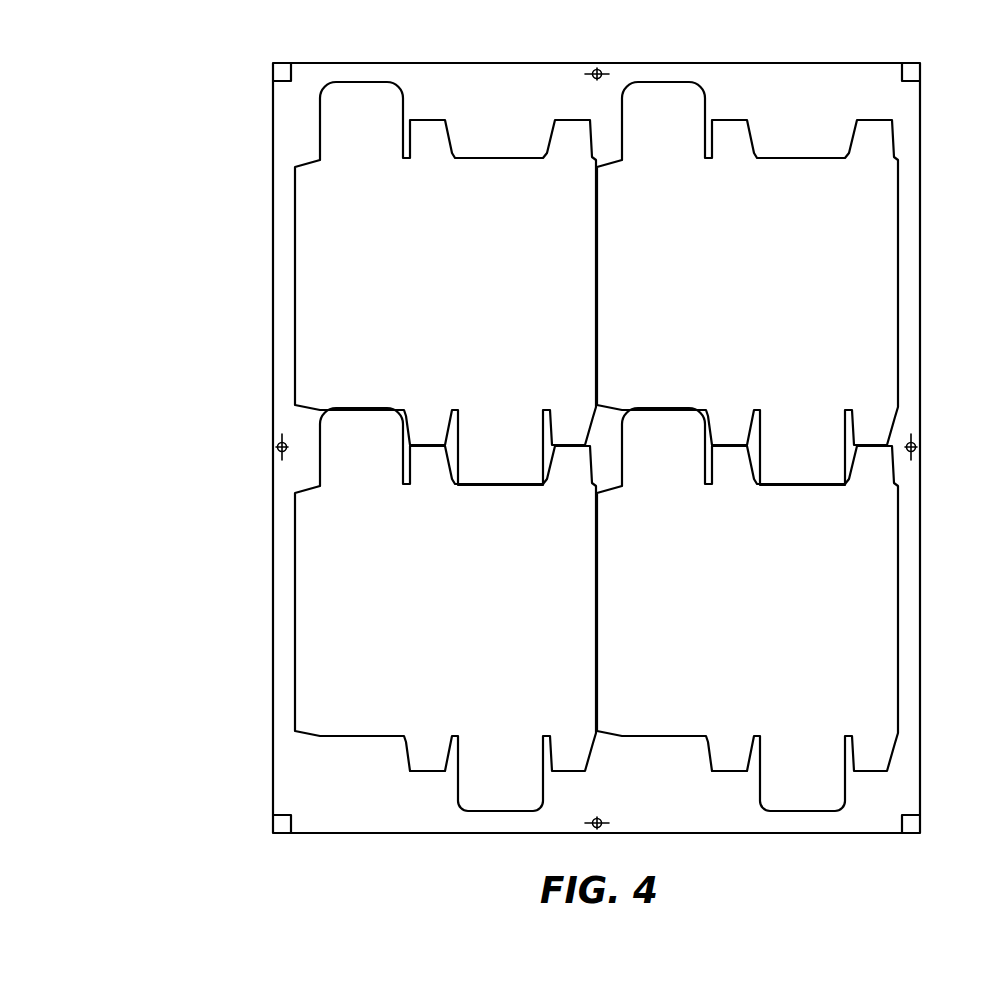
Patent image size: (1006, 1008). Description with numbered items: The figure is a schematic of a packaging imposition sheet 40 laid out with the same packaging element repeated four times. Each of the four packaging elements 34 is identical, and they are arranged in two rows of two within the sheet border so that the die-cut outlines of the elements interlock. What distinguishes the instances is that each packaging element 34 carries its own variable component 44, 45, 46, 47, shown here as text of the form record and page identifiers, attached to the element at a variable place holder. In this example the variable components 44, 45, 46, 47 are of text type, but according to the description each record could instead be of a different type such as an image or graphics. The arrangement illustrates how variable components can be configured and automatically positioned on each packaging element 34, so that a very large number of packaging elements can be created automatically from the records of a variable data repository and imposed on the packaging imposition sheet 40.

The packaging imposition sheet 40 is at (145, 757).
The packaging element 34 is at (315, 289).
The variable component 44 is at (430, 349).
The variable component 45 is at (430, 665).
The variable component 46 is at (748, 349).
The variable component 47 is at (748, 665).